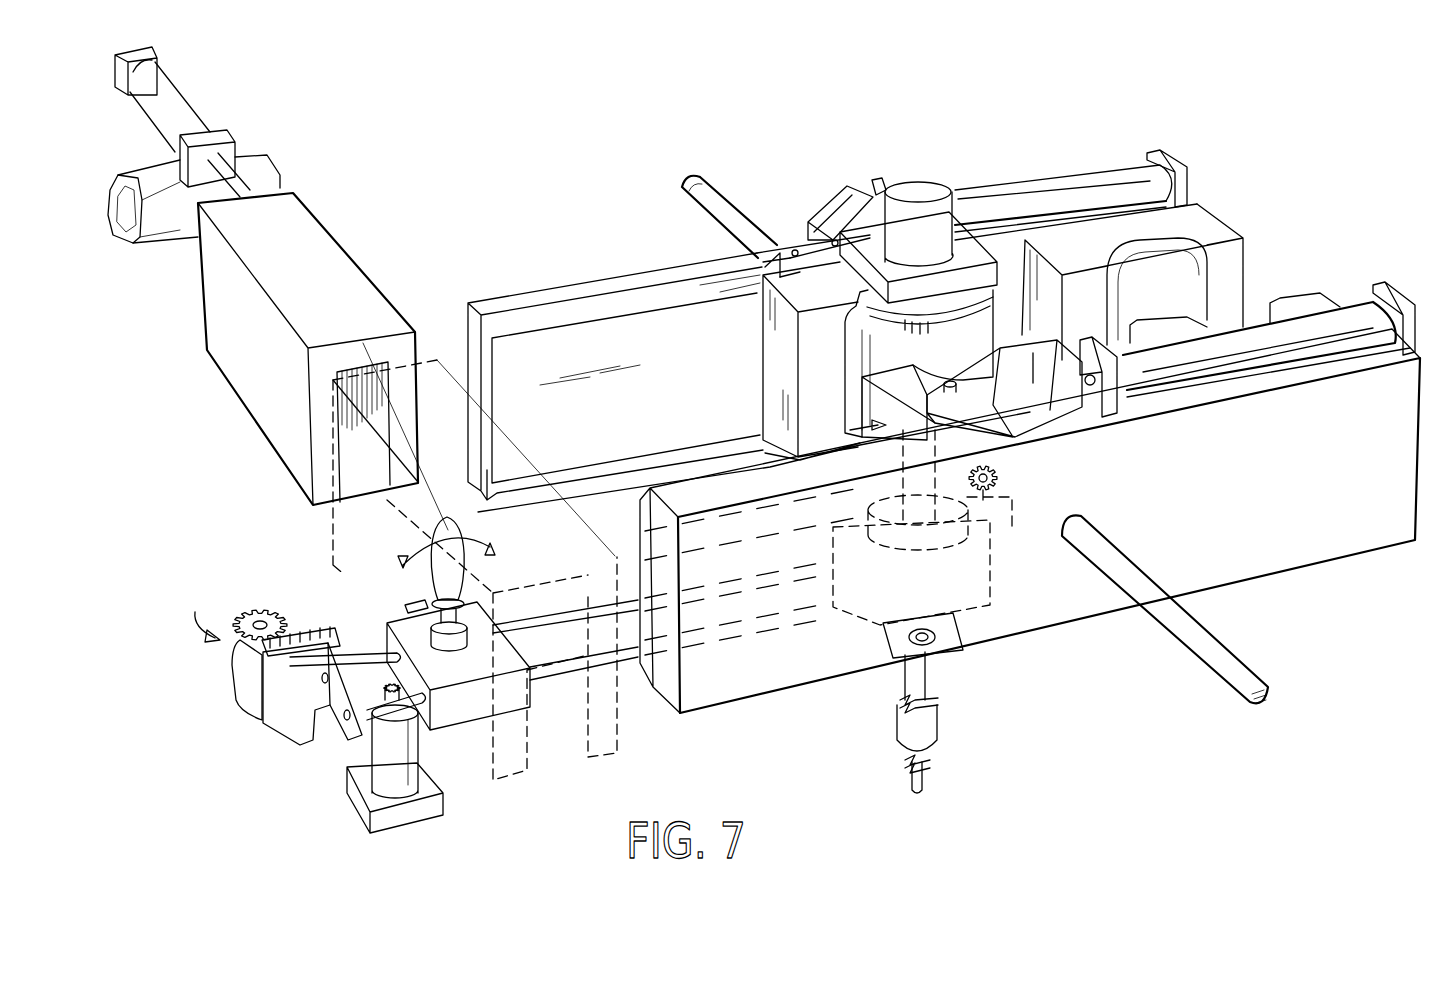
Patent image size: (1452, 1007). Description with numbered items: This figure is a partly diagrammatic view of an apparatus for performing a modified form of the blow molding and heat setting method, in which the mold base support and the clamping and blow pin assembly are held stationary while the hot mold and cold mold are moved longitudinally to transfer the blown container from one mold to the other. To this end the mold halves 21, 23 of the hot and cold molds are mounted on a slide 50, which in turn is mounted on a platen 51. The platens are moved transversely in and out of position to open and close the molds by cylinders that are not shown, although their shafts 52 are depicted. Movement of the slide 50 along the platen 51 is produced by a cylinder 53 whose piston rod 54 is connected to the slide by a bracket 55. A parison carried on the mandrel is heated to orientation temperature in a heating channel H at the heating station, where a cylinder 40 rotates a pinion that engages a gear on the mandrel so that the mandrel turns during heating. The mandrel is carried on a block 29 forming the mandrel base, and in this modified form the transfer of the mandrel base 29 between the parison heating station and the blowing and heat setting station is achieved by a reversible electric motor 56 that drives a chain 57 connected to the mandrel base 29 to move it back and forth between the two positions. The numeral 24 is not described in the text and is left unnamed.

The heating channel H is at (232, 347).
The mold sections 21 is at (778, 338).
The mold sections 23 is at (1083, 245).
The guide rod 24 is at (1053, 227).
The block 29 is at (523, 713).
The cylinder 40 is at (383, 740).
The slide 50 is at (763, 270).
The platen 51 is at (510, 300).
The shafts 52 is at (703, 190).
The cylinder 53 is at (1300, 325).
The piston rod 54 is at (1093, 382).
The bracket 55 is at (1052, 403).
The reversible electric motor 56 is at (240, 662).
The chain 57 is at (318, 628).